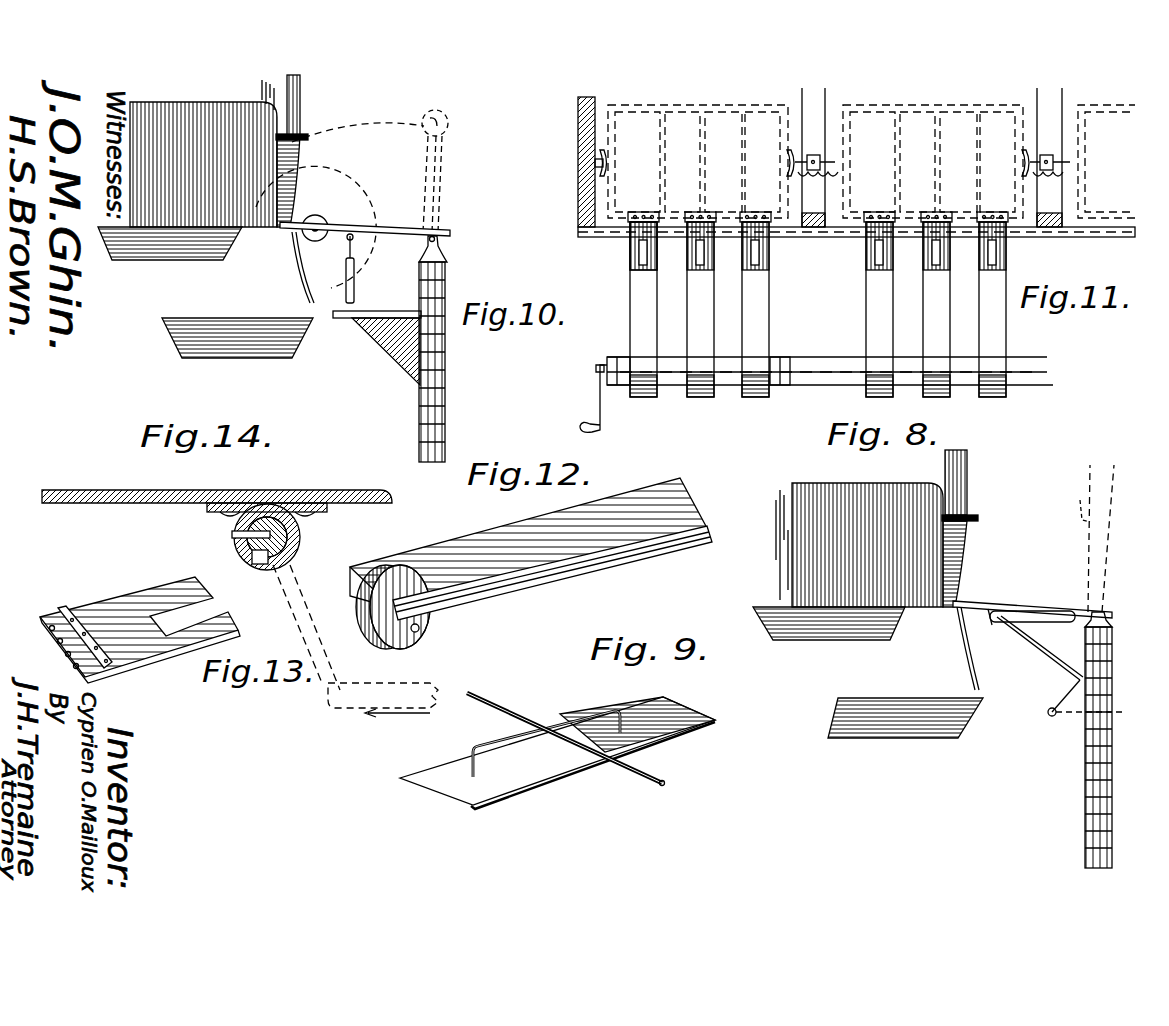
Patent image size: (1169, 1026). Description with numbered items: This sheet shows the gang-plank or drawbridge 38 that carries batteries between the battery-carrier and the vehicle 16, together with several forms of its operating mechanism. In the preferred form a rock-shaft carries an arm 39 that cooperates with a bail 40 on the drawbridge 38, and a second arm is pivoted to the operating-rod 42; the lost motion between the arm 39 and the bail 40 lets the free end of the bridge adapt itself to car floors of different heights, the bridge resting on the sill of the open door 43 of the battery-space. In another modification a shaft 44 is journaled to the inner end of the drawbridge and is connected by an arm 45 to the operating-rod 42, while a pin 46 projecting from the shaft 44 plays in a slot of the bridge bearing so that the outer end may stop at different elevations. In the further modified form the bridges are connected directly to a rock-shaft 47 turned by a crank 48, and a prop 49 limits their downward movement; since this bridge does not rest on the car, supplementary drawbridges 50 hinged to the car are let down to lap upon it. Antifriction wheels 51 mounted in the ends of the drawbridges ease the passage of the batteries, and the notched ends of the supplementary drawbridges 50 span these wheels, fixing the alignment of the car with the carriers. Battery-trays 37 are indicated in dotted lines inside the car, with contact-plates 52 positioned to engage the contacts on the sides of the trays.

In FIG. 11, the vehicle 16 is at (578, 120).
In FIG. 8, the vehicle 16 is at (955, 498).
In FIG. 11, the battery-tray 37 is at (697, 108).
In FIG. 10, the drawbridge 38 is at (392, 228).
In FIG. 11, the drawbridge 38 is at (632, 318).
In FIG. 14, the drawbridge 38 is at (68, 490).
In FIG. 12, the drawbridge 38 is at (517, 563).
In FIG. 9, the drawbridge 38 is at (686, 727).
In FIG. 8, the drawbridge 38 is at (1036, 607).
In FIG. 9, the arm 39 is at (659, 785).
In FIG. 9, the bail 40 is at (604, 720).
In FIG. 13, the operating-rod 42 is at (412, 685).
In FIG. 10, the door 43 is at (290, 256).
In FIG. 8, the door 43 is at (964, 650).
In FIG. 14, the shaft 44 is at (300, 532).
In FIG. 14, the arm 45 is at (295, 603).
In FIG. 14, the pin 46 is at (232, 535).
In FIG. 10, the rock-shaft 47 is at (440, 241).
In FIG. 11, the rock-shaft 47 is at (812, 366).
In FIG. 11, the crank 48 is at (598, 392).
In FIG. 10, the prop 49 is at (356, 272).
In FIG. 11, the supplementary drawbridge 50 is at (768, 245).
In FIG. 14, the supplementary drawbridge 50 is at (104, 606).
In FIG. 10, the antifriction wheel 51 is at (318, 242).
In FIG. 11, the antifriction wheel 51 is at (640, 252).
In FIG. 12, the antifriction wheel 51 is at (372, 614).
In FIG. 11, the contact-plate 52 is at (787, 164).